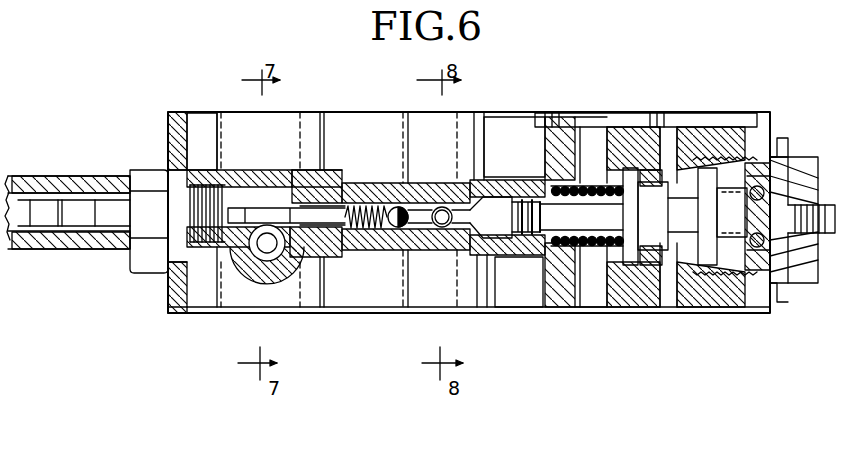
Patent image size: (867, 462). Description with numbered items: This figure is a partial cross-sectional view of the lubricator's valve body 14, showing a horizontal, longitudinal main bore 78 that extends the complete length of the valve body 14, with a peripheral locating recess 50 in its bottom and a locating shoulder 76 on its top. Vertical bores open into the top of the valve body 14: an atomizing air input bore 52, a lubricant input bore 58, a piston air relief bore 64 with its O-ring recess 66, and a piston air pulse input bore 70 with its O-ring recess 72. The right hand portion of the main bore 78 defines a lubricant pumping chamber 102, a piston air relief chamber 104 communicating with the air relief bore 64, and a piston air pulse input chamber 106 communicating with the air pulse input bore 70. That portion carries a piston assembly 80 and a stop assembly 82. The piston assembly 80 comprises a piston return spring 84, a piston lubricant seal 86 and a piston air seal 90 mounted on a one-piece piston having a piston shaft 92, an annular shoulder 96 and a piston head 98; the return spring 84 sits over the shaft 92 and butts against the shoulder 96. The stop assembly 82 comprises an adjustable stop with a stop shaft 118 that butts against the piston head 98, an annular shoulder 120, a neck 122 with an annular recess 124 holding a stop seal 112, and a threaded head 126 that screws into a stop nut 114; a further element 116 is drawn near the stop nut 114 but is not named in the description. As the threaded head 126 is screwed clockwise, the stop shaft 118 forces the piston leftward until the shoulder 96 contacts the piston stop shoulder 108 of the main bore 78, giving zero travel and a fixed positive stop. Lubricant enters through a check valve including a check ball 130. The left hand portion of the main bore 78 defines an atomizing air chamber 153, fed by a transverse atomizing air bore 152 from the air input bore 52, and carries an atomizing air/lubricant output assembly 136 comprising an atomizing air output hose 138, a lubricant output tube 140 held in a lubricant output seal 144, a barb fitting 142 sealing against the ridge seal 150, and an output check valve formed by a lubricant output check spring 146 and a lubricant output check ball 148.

The valve body 14 is at (170, 293).
The peripheral locating recess 50 is at (182, 309).
The atomizing air input bore 52 is at (255, 108).
The lubricant input bore 58 is at (430, 111).
The piston air relief bore 64 is at (583, 130).
The O-ring recess 66 is at (593, 120).
The piston air pulse input bore 70 is at (712, 140).
The O-ring recess 72 is at (733, 123).
The locating shoulder 76 is at (174, 118).
The main bore 78 is at (423, 197).
The piston assembly 80 is at (670, 417).
The stop assembly 82 is at (674, 417).
The piston return spring 84 is at (593, 300).
The piston lubricant seal 86 is at (537, 238).
The piston air seal 90 is at (652, 163).
The piston shaft 92 is at (512, 222).
The annular shoulder 96 is at (632, 215).
The piston head 98 is at (639, 283).
The lubricant pumping chamber 102 is at (503, 197).
The piston air relief chamber 104 is at (610, 153).
The piston air pulse input chamber 106 is at (665, 283).
The piston stop shoulder 108 is at (612, 280).
The stop seal 112 is at (781, 302).
The stop nut 114 is at (784, 297).
The seal ring 116 is at (755, 300).
The stop shaft 118 is at (685, 170).
The annular shoulder 120 is at (702, 140).
The neck 122 is at (738, 290).
The annular recess 124 is at (776, 190).
The threaded head 126 is at (815, 283).
The check ball 130 is at (442, 224).
The atomizing air/lubricant output assembly 136 is at (133, 128).
The atomizing air output hose 138 is at (35, 251).
The lubricant output tube 140 is at (24, 172).
The barb fitting 142 is at (140, 177).
The lubricant output seal 144 is at (338, 187).
The lubricant output check spring 146 is at (352, 187).
The lubricant output check ball 148 is at (394, 209).
The ridge seal 150 is at (168, 267).
The atomizing air bore 152 is at (262, 246).
The atomizing air chamber 153 is at (242, 187).